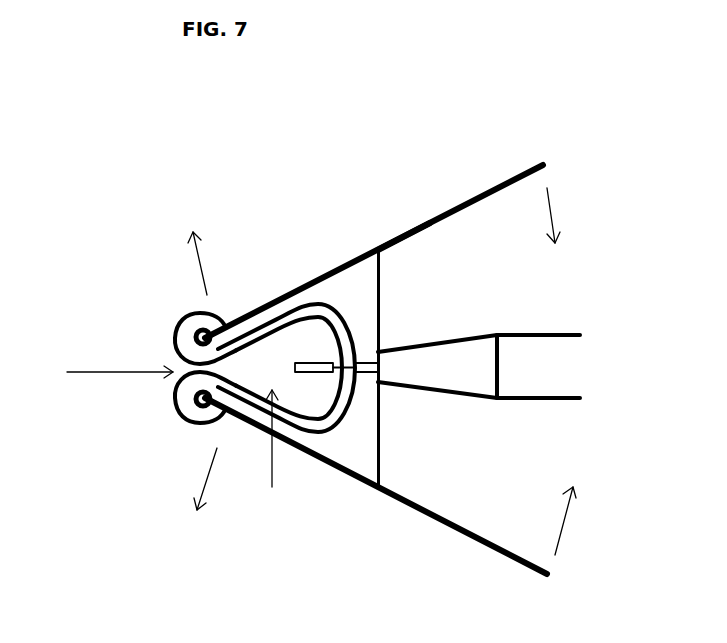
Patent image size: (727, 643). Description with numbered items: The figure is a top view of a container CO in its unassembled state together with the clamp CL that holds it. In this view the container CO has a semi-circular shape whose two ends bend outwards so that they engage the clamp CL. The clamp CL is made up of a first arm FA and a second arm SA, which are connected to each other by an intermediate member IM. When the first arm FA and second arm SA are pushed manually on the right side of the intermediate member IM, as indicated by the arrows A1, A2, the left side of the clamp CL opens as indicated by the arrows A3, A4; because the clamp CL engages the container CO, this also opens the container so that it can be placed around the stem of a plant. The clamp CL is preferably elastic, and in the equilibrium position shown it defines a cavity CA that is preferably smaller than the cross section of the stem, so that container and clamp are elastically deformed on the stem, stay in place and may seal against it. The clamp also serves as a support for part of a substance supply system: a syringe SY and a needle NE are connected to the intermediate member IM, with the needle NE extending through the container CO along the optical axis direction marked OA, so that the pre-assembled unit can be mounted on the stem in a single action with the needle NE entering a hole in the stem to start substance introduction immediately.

The first arm FA is at (490, 188).
The clamp CL is at (400, 233).
The second arm SA is at (480, 545).
The intermediate member IM is at (379, 447).
The container CO is at (341, 322).
The needle NE is at (318, 362).
The syringe SY is at (482, 355).
The optical axis OA is at (102, 371).
The cavity CA is at (273, 452).
The arrow A1 is at (559, 231).
The arrow A2 is at (574, 507).
The arrow A3 is at (193, 250).
The arrow A4 is at (198, 495).